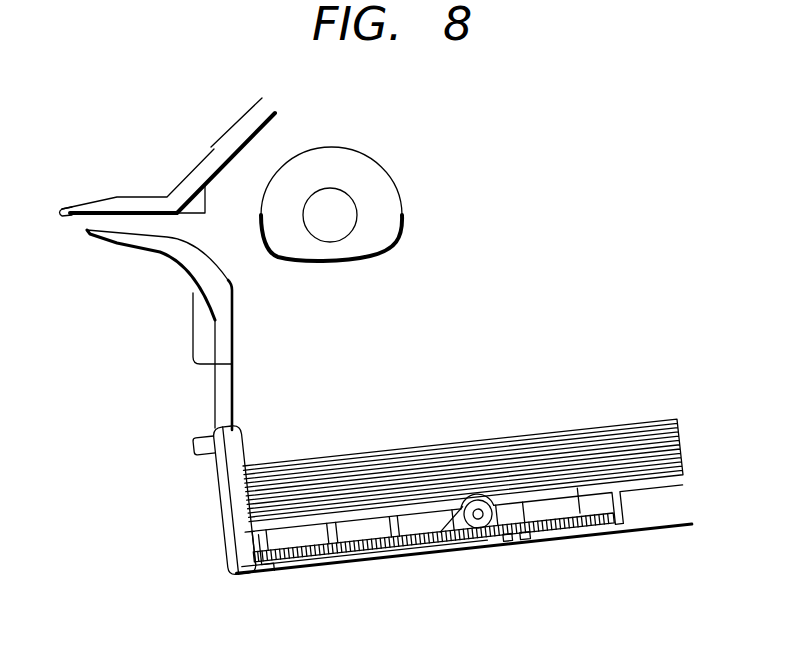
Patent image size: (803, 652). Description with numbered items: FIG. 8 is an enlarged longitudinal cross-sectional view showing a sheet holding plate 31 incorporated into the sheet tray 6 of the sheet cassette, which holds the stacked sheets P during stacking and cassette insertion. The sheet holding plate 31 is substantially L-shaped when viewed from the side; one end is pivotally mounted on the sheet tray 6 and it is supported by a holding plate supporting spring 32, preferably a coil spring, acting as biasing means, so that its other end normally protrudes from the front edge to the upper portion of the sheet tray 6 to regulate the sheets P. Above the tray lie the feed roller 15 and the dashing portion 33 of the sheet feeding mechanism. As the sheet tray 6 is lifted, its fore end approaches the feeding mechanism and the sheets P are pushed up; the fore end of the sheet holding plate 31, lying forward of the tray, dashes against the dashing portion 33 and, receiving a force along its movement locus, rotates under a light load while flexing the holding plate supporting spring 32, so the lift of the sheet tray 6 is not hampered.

The feed roller 15 is at (368, 178).
The dashing portion 33 is at (210, 270).
The sheet holding plate 31 is at (225, 523).
The holding plate supporting spring 32 is at (407, 543).
The sheet tray 6 is at (647, 485).
The sheets P is at (612, 442).